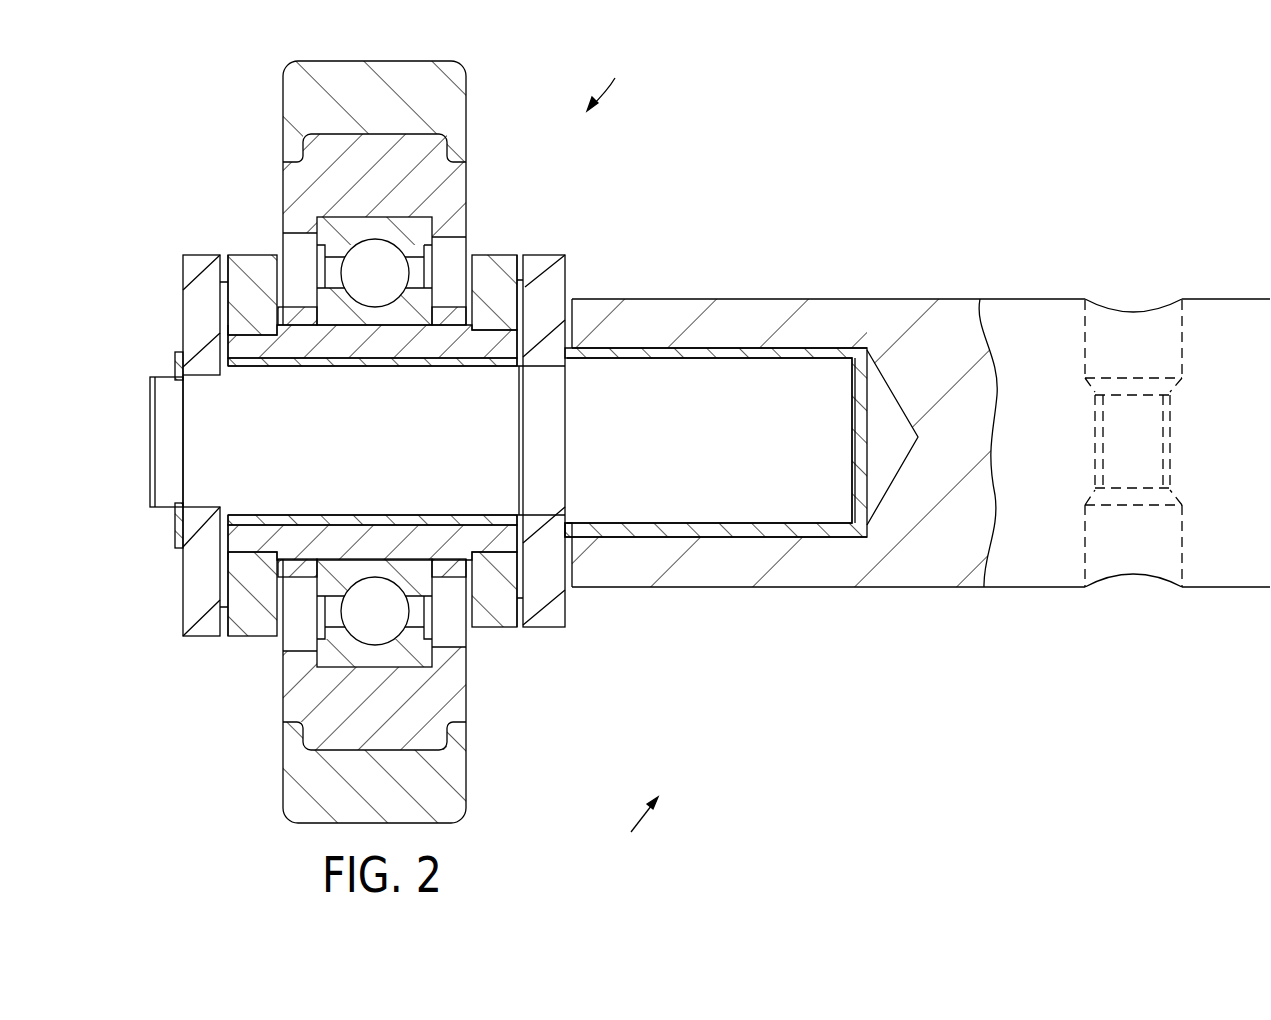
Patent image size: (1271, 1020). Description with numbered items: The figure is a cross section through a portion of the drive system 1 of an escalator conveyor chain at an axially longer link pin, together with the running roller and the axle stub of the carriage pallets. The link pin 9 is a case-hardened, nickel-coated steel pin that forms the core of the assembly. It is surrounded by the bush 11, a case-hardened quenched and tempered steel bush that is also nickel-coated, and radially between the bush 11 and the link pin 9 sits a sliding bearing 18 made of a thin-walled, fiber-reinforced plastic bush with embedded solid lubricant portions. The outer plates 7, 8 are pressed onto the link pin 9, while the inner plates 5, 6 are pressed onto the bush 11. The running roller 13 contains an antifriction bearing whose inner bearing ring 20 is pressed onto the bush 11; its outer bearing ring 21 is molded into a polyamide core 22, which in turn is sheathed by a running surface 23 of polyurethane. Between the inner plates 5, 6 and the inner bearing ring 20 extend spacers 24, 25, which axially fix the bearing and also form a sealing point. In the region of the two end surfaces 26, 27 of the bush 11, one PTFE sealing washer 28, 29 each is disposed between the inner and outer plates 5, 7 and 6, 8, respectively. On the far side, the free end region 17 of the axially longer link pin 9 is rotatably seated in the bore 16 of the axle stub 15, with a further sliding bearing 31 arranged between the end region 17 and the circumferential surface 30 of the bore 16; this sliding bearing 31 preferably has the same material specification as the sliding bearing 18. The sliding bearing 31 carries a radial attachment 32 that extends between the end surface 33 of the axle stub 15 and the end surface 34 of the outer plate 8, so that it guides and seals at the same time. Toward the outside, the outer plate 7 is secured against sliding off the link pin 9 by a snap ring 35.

The drive system 1 is at (635, 825).
The inner plate 5 is at (238, 260).
The inner plate 6 is at (505, 262).
The outer plate 7 is at (187, 267).
The outer plate 8 is at (550, 273).
The link pin 9 is at (416, 479).
The bush 11 is at (305, 343).
The running roller 13 is at (613, 78).
The axle stub 15 is at (1048, 317).
The bore 16 is at (893, 427).
The end region 17 is at (696, 419).
The sliding bearing 18 is at (343, 366).
The inner bearing ring 20 is at (411, 307).
The outer bearing ring 21 is at (413, 232).
The polyamide core 22 is at (447, 177).
The running surface 23 is at (447, 97).
The spacer 24 is at (292, 307).
The spacer 25 is at (443, 317).
The end surface 26 is at (230, 373).
The end surface 27 is at (508, 340).
The sealing washer 28 is at (220, 300).
The sealing washer 29 is at (520, 600).
The circumferential surface 30 is at (763, 537).
The sliding bearing 31 is at (748, 347).
The radial attachment 32 is at (565, 550).
The end surface 33 is at (570, 300).
The end surface 34 is at (563, 608).
The snap ring 35 is at (178, 518).